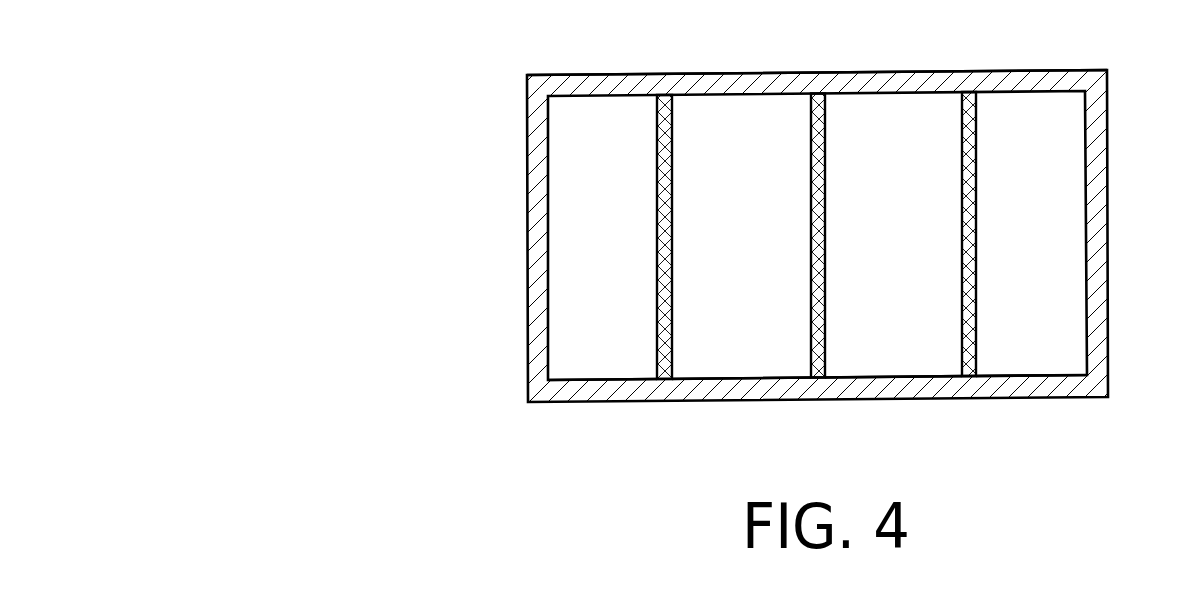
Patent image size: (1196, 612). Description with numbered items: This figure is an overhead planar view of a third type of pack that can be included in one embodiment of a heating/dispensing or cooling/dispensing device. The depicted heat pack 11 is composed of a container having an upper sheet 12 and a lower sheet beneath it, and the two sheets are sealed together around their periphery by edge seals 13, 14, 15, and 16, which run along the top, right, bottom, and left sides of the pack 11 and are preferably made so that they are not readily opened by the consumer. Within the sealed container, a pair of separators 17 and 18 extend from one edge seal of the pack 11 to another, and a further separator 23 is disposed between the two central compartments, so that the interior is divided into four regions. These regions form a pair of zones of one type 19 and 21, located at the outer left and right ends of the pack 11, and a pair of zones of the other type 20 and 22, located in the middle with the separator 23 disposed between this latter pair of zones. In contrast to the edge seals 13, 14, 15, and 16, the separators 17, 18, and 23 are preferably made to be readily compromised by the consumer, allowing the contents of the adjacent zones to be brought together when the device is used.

The heat pack 11 is at (461, 208).
The upper sheet 12 is at (732, 80).
The edge seal 13 is at (605, 85).
The edge seal 14 is at (1097, 220).
The edge seal 15 is at (827, 390).
The edge seal 16 is at (538, 330).
The separator 17 is at (662, 218).
The separator 23 is at (823, 170).
The separator 18 is at (972, 290).
The zone 19 is at (582, 358).
The zone 20 is at (739, 355).
The zone 22 is at (900, 350).
The zone 21 is at (1037, 350).